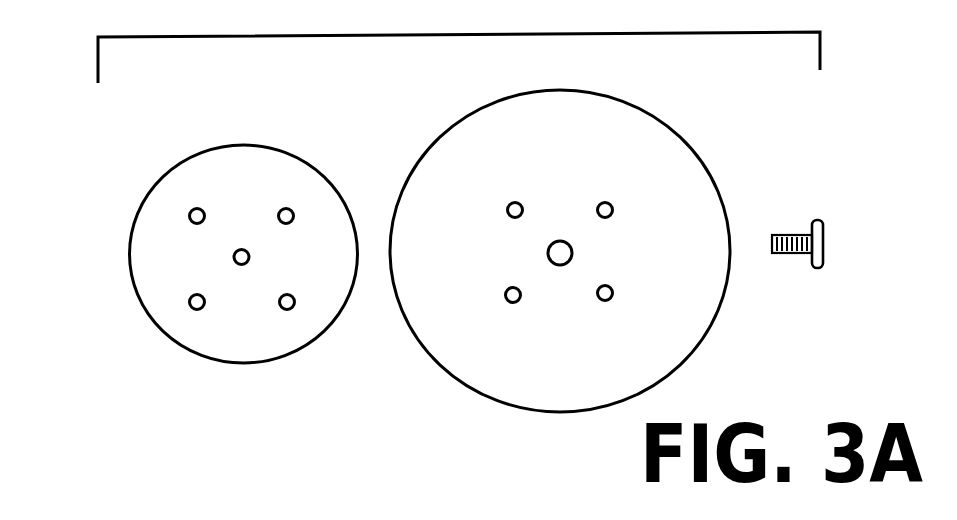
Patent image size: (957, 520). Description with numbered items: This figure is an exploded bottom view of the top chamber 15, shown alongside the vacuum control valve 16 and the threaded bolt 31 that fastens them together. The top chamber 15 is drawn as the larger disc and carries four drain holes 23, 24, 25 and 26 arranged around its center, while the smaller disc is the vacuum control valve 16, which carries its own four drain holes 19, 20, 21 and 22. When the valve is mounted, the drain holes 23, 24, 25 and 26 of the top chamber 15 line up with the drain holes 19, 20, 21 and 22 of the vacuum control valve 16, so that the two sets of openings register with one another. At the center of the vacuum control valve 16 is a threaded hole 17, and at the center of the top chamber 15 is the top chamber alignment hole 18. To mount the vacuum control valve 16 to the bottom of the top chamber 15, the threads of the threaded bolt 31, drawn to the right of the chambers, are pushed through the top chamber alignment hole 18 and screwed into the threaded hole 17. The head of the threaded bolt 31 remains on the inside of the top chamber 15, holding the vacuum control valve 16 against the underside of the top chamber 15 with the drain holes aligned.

The top chamber 15 is at (690, 140).
The vacuum control valve 16 is at (130, 242).
The threaded hole 17 is at (234, 260).
The top chamber alignment hole 18 is at (560, 266).
The drain hole 19 is at (197, 208).
The drain hole 20 is at (287, 208).
The drain hole 21 is at (195, 310).
The drain hole 22 is at (289, 310).
The drain hole 23 is at (515, 202).
The drain hole 24 is at (608, 203).
The drain hole 25 is at (510, 303).
The drain hole 26 is at (612, 300).
The threaded bolt 31 is at (823, 227).